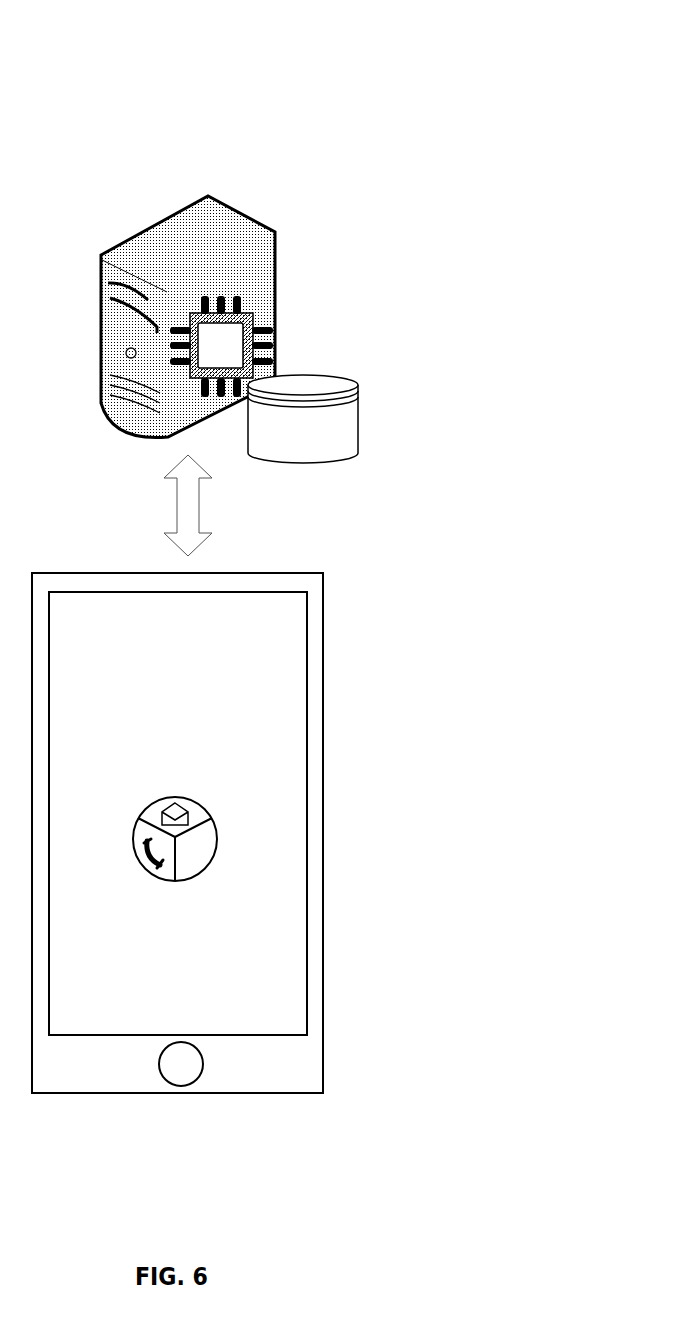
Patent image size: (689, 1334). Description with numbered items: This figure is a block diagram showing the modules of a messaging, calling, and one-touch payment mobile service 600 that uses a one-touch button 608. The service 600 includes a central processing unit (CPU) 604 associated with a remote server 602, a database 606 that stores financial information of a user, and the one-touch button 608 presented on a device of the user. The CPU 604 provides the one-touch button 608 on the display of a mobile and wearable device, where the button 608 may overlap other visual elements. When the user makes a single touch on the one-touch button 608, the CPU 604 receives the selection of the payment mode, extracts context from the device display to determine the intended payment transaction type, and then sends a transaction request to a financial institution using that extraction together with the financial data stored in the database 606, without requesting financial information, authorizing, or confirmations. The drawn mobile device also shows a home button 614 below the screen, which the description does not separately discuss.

The messaging, calling, and one-touch payment mobile service 600 is at (580, 62).
The remote server 602 is at (132, 238).
The central processing unit (CPU) 604 is at (274, 324).
The database 606 is at (361, 421).
The one-touch button 608 is at (174, 797).
The home button 614 is at (217, 1064).